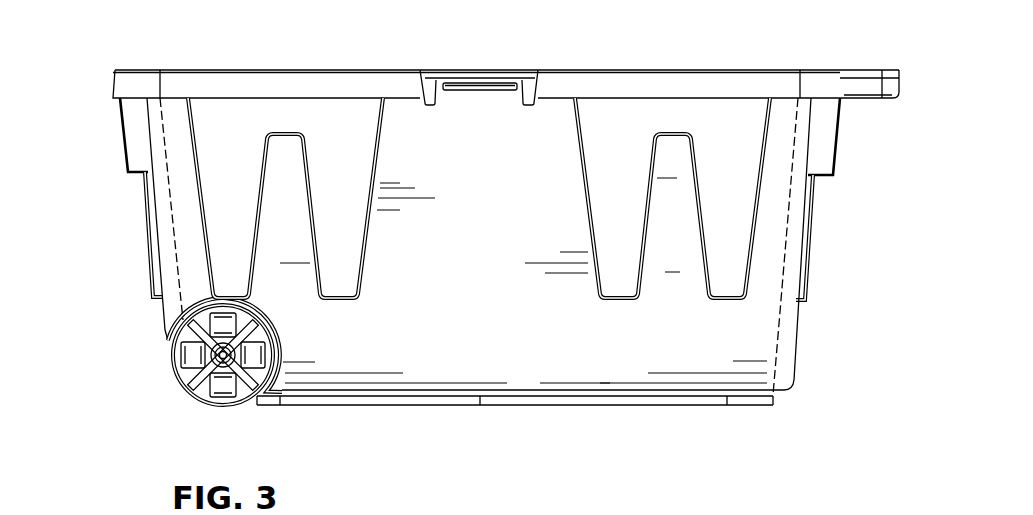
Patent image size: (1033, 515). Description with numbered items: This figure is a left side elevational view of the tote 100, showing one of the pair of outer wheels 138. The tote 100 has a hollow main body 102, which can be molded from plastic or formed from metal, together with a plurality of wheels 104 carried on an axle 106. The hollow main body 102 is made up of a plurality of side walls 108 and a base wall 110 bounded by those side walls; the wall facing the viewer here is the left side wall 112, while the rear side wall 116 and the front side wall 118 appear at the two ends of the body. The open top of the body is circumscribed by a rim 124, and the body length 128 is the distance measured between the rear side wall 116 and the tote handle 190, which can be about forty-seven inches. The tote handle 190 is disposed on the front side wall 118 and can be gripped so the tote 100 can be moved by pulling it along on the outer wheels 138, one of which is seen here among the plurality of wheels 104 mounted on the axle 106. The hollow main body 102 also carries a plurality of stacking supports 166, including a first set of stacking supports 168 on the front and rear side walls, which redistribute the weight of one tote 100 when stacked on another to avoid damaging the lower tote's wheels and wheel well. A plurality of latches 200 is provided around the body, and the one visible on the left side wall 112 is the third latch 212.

The tote 100 is at (928, 44).
The hollow main body 102 is at (822, 215).
The plurality of wheels 104 is at (176, 370).
The axle 106 is at (222, 366).
The plurality of side walls 108 is at (483, 270).
The base wall 110 is at (468, 430).
The left side wall 112 is at (452, 300).
The rear side wall 116 is at (146, 207).
The front side wall 118 is at (808, 282).
The rim 124 is at (330, 72).
The body length 128 is at (899, 19).
The pair of outer wheels 138 is at (186, 376).
The plurality of stacking supports 166 is at (112, 118).
The first set of stacking supports 168 is at (467, 141).
The tote handle 190 is at (903, 98).
The plurality of latches 200 is at (458, 84).
The third latch 212 is at (479, 123).